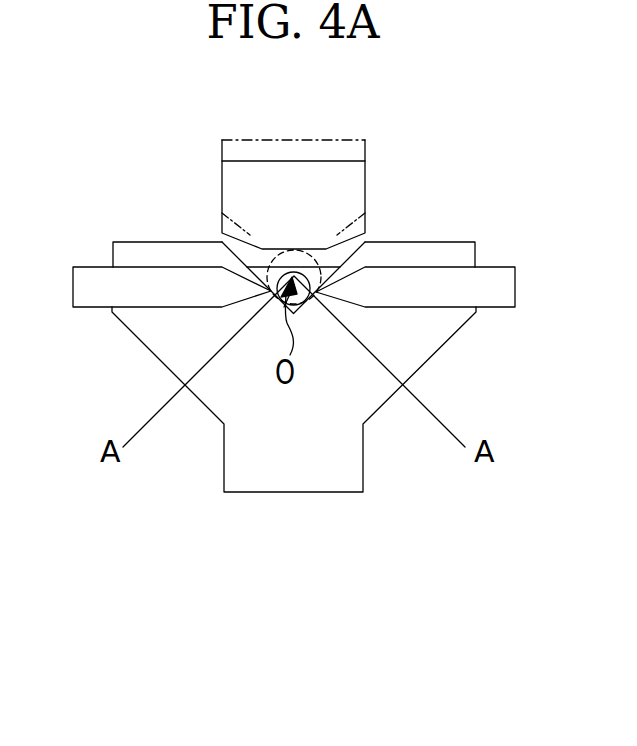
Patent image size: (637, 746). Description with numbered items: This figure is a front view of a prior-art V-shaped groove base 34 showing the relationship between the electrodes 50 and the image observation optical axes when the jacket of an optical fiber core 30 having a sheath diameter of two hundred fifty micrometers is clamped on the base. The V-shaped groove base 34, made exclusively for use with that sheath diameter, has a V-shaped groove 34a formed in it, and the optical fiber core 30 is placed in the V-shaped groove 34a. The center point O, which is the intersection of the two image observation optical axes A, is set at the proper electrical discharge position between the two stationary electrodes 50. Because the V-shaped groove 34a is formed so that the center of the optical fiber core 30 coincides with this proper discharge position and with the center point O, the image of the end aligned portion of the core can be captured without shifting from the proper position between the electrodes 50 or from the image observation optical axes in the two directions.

The optical fiber core 30 is at (279, 283).
The V-shaped groove base 34 is at (285, 483).
The V-shaped groove 34a is at (343, 260).
The electrodes 50 is at (87, 268).